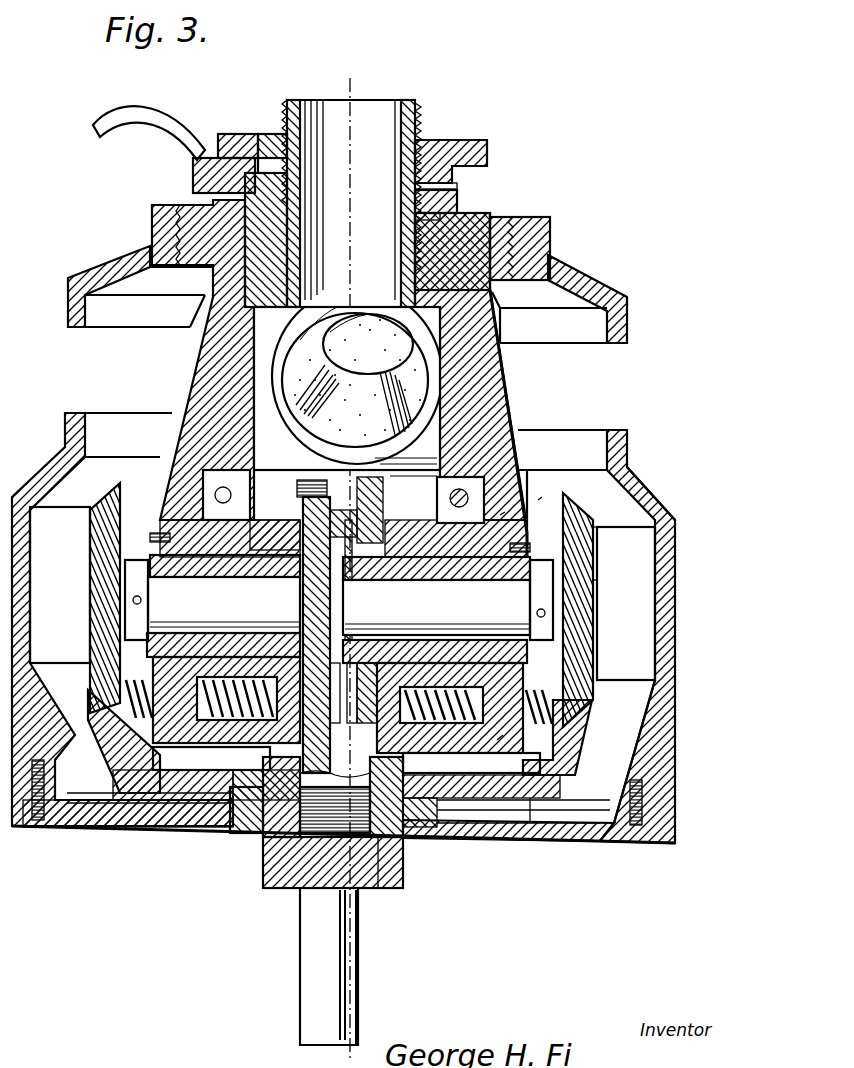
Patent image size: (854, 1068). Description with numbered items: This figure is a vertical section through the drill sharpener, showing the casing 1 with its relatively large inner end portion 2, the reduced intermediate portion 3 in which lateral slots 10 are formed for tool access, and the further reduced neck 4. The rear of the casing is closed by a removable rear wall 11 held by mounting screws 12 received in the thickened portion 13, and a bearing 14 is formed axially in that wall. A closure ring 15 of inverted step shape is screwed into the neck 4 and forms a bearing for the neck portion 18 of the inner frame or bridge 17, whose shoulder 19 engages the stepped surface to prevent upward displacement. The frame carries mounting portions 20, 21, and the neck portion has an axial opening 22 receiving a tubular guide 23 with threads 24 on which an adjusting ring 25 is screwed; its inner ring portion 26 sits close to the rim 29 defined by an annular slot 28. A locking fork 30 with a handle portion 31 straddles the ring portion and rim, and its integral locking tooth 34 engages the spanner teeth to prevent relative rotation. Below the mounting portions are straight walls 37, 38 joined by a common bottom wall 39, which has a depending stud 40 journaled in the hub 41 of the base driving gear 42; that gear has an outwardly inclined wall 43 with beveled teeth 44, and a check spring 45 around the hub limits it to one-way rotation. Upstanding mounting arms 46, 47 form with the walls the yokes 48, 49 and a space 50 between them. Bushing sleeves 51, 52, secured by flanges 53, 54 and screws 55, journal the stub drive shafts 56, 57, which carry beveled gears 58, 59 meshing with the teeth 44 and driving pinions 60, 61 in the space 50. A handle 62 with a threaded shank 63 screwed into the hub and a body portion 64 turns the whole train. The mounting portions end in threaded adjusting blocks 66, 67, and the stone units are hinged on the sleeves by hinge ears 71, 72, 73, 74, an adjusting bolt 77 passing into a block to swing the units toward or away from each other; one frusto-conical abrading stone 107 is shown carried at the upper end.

The casing 1 is at (677, 670).
The inner end portion 2 is at (679, 640).
The intermediate portion 3 is at (630, 450).
The neck 4 is at (362, 86).
The slots 10 is at (96, 328).
The removable rear wall 11 is at (600, 840).
The mounting screws 12 is at (634, 842).
The thickened portion 13 is at (656, 750).
The bearing 14 is at (478, 824).
The closure ring 15 is at (515, 233).
The inner frame or bridge 17 is at (524, 407).
The neck portion 18 is at (492, 226).
The shoulder 19 is at (549, 233).
The mounting portion 20 is at (172, 370).
The mounting portion 21 is at (510, 379).
The axial opening 22 is at (459, 196).
The tubular guide 23 is at (418, 125).
The threads 24 is at (453, 146).
The adjusting ring 25 is at (488, 156).
The inner ring portion 26 is at (458, 186).
The annular slot 28 is at (461, 205).
The rim 29 is at (228, 133).
The locking fork 30 is at (193, 180).
The handle portion 31 is at (117, 127).
The locking tooth 34 is at (262, 133).
The straight wall 37 is at (172, 482).
The straight wall 38 is at (532, 545).
The common bottom wall 39 is at (500, 800).
The depending stud 40 is at (410, 836).
The hub 41 is at (290, 826).
The base driving gear 42 is at (533, 800).
The outwardly inclined wall 43 is at (570, 748).
The beveled teeth 44 is at (556, 708).
The check spring 45 is at (167, 822).
The upstanding mounting arm 46 is at (226, 712).
The upstanding mounting arm 47 is at (458, 719).
The yoke 48 is at (140, 730).
The yoke 49 is at (500, 742).
The space 50 is at (305, 810).
The bushing sleeve 51 is at (170, 632).
The bushing sleeve 52 is at (470, 578).
The flange 53 is at (93, 528).
The flange 54 is at (590, 522).
The screws 55 is at (598, 548).
The stub drive shaft 56 is at (224, 605).
The stub drive shaft 57 is at (436, 607).
The beveled gear 58 is at (88, 578).
The beveled gear 59 is at (596, 583).
The driving pinion 60 is at (292, 496).
The driving pinion 61 is at (390, 473).
The handle 62 is at (371, 964).
The threaded shank 63 is at (312, 846).
The body portion 64 is at (378, 856).
The adjusting block 66 is at (240, 497).
The adjusting block 67 is at (436, 503).
The hinge ear 71 is at (118, 712).
The hinge ear 72 is at (401, 719).
The hinge ear 73 is at (206, 773).
The hinge ear 74 is at (540, 500).
The adjusting bolt 77 is at (500, 515).
The abrading stone 107 is at (395, 280).